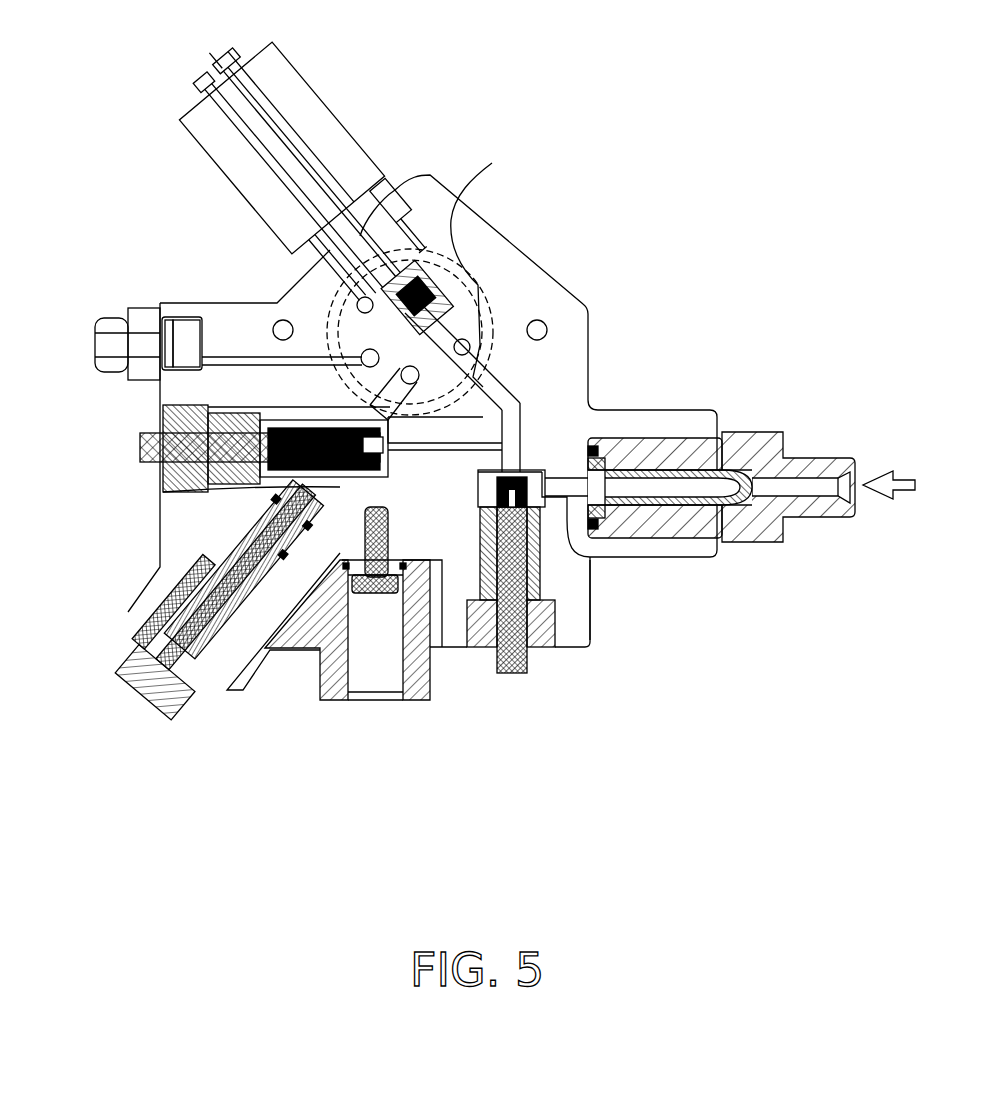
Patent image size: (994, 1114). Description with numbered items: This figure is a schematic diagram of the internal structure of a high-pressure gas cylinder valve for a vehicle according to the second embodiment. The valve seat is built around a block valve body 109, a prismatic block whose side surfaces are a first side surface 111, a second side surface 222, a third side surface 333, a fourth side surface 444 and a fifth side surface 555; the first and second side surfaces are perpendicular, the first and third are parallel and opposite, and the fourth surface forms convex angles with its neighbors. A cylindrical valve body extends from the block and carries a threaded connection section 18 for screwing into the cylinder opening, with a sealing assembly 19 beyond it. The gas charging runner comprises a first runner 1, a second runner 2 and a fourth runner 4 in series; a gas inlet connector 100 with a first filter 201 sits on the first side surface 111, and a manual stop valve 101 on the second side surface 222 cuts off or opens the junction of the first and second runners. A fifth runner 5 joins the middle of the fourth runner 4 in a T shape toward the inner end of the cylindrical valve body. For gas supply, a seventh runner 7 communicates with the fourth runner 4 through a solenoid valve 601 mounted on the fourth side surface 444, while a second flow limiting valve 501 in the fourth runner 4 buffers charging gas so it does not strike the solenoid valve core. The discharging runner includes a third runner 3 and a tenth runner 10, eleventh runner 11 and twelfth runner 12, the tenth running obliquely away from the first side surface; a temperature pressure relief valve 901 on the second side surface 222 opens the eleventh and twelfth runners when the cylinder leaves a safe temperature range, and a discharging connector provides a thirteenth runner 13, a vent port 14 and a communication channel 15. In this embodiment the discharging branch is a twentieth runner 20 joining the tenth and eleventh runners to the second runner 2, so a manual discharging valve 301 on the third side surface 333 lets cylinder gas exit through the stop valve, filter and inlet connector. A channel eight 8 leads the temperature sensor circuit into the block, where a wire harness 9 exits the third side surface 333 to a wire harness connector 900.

The first runner 1 is at (590, 558).
The second runner 2 is at (513, 447).
The third runner 3 is at (470, 355).
The fourth runner 4 is at (510, 380).
The fifth runner 5 is at (488, 292).
The seventh runner 7 is at (350, 297).
The channel eight 8 is at (333, 320).
The wire harness 9 is at (243, 360).
The tenth runner 10 is at (395, 408).
The eleventh runner 11 is at (300, 488).
The twelfth runner 12 is at (302, 563).
The thirteenth runner 13 is at (340, 587).
The vent port 14 is at (382, 650).
The communication channel 15 is at (422, 660).
The threaded connection section 18 is at (512, 293).
The sealing assembly 19 is at (492, 165).
The twentieth runner 20 is at (410, 443).
The gas inlet connector 100 is at (824, 462).
The manual stop valve 101 is at (537, 656).
The block valve body 109 is at (590, 302).
The first side surface 111 is at (612, 630).
The first filter 201 is at (672, 443).
The second side surface 222 is at (417, 720).
The manual discharging valve 301 is at (165, 465).
The third side surface 333 is at (140, 418).
The fourth side surface 444 is at (236, 222).
The second flow limiting valve 501 is at (488, 295).
The fifth side surface 555 is at (562, 197).
The solenoid valve 601 is at (387, 167).
The wire harness connector 900 is at (110, 330).
The temperature pressure relief valve 901 is at (198, 690).